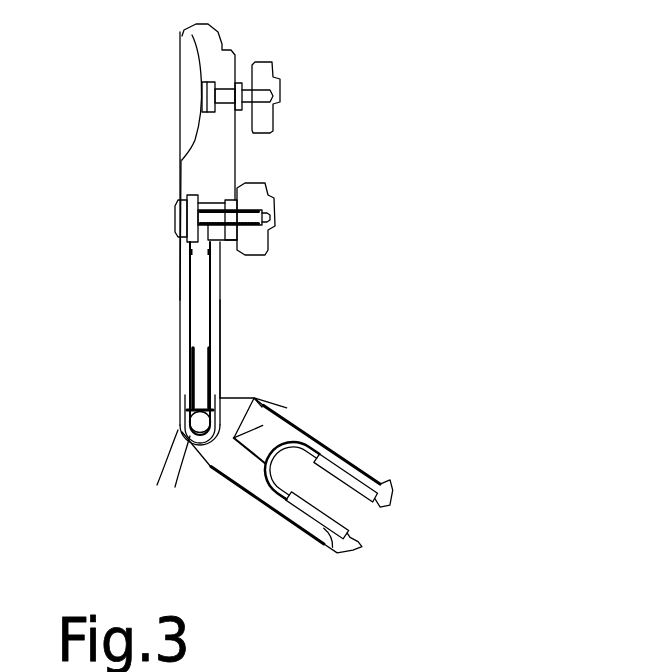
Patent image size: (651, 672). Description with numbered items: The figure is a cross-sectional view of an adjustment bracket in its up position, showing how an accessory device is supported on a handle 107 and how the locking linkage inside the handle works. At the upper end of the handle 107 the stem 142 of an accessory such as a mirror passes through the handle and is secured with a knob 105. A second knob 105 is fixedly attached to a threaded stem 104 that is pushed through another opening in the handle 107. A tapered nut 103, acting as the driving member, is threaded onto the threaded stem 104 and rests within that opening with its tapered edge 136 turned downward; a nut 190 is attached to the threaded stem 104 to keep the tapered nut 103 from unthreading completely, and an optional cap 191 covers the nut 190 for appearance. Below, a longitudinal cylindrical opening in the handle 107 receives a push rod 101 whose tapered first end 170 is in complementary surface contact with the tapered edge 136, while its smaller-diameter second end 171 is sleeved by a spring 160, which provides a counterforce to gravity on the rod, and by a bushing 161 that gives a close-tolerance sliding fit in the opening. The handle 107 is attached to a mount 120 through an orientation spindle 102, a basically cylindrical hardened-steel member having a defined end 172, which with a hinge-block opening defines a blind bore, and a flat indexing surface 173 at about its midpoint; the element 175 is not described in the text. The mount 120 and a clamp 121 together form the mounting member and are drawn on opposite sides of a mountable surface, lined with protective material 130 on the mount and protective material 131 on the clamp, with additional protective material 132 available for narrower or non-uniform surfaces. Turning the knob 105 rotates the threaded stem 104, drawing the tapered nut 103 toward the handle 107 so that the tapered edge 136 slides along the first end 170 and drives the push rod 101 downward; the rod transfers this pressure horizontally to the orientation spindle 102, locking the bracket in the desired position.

The push rod 101 is at (205, 310).
The orientation spindle 102 is at (175, 430).
The tapered nut 103 is at (193, 197).
The threaded stem 104 is at (267, 217).
The knob 105 is at (276, 70).
The handle 107 is at (235, 167).
The mount 120 is at (250, 470).
The clamp 121 is at (320, 450).
The protective material 130 is at (270, 503).
The protective material 131 is at (327, 443).
The additional protective material 132 is at (377, 458).
The tapered edge 136 is at (194, 252).
The stem 142 is at (257, 93).
The spring 160 is at (213, 367).
The bushing 161 is at (277, 425).
The first end 170 is at (230, 243).
The second end 171 is at (200, 368).
The defined end 172 is at (197, 450).
The flat indexing surface 173 is at (193, 408).
The link 175 is at (203, 458).
The nut 190 is at (178, 226).
The cap 191 is at (174, 215).